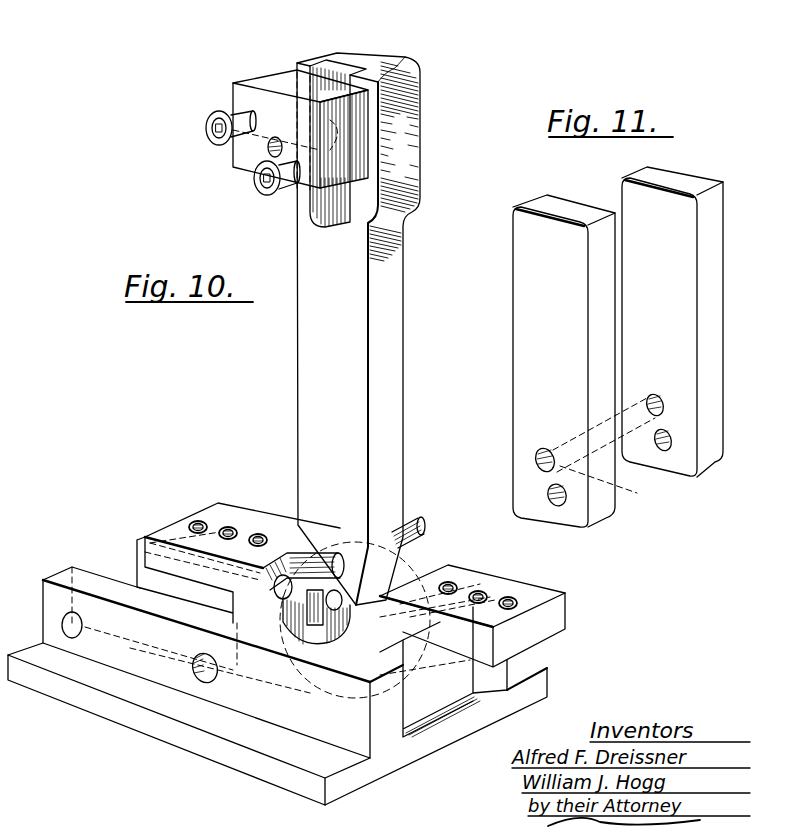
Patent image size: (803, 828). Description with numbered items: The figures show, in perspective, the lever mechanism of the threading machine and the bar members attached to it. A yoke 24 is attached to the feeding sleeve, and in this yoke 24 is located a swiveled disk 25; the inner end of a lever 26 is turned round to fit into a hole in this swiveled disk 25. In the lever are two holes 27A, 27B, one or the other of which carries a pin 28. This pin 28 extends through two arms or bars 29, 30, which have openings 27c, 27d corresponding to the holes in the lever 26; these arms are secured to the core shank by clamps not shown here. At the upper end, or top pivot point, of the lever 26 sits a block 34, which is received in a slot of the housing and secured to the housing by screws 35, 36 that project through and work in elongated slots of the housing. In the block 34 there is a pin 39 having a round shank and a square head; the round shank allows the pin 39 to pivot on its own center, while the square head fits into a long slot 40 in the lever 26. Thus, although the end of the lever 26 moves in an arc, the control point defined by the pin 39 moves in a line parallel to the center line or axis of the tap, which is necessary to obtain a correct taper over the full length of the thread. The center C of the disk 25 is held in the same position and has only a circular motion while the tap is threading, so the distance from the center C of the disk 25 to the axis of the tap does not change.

In FIG. 10, the yoke 24 is at (422, 701).
In FIG. 10, the swiveled disk 25 is at (312, 618).
In FIG. 10, the lever 26 is at (308, 375).
In FIG. 10, the hole 27A is at (305, 626).
In FIG. 10, the hole 27B is at (345, 560).
In FIG. 11, the opening 27c is at (557, 505).
In FIG. 11, the opening 27d is at (540, 452).
In FIG. 10, the pin 28 is at (285, 583).
In FIG. 11, the pin 28 is at (608, 454).
In FIG. 11, the arm or bar 29 is at (513, 252).
In FIG. 11, the arm or bar 30 is at (627, 190).
In FIG. 10, the block 34 is at (262, 82).
In FIG. 10, the screw 35 is at (205, 128).
In FIG. 10, the screw 36 is at (255, 181).
In FIG. 10, the pin 39 is at (268, 148).
In FIG. 10, the long slot 40 is at (347, 70).
In FIG. 10, the center of the disk C is at (322, 618).